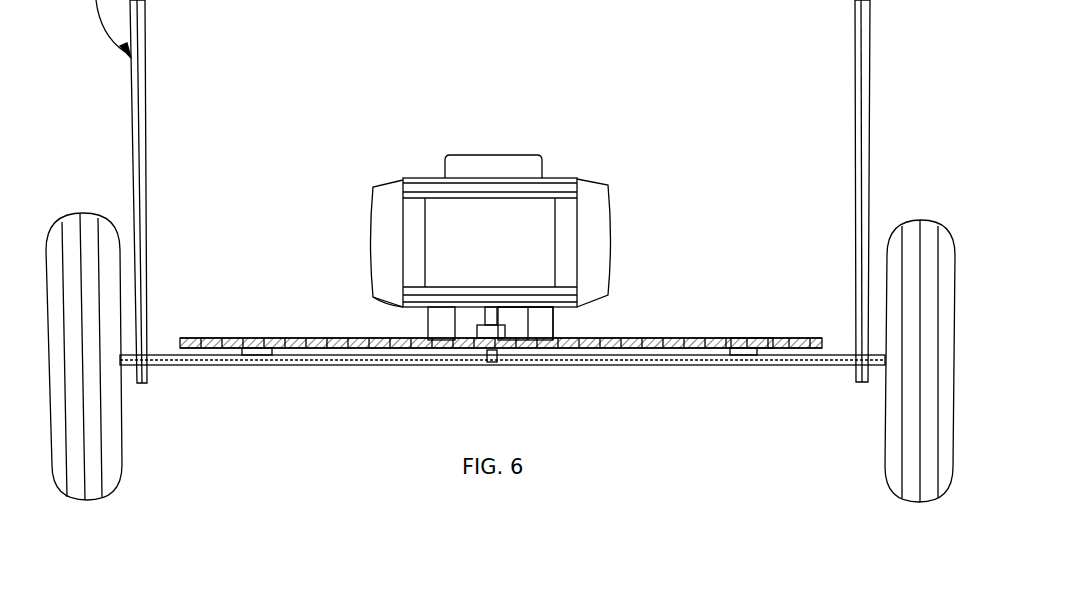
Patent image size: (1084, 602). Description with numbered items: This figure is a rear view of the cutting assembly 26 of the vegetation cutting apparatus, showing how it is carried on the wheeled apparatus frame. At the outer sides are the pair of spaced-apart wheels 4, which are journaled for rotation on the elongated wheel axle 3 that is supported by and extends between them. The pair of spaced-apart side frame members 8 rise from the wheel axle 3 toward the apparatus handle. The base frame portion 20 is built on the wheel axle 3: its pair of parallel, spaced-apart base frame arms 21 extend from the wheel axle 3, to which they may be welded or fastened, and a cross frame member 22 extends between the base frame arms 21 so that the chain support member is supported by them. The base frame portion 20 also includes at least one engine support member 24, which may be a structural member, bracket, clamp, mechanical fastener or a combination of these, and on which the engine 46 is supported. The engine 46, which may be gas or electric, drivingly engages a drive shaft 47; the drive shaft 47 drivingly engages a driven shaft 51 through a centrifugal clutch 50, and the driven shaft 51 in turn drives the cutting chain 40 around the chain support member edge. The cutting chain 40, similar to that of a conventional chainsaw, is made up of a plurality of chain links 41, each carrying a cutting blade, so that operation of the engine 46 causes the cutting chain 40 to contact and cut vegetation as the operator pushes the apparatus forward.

The wheel axle 3 is at (222, 366).
The wheels 4 is at (90, 220).
The side frame members 8 is at (146, 100).
The base frame portion 20 is at (745, 365).
The base frame arms 21 is at (282, 356).
The cross frame member 22 is at (387, 355).
The engine support member 24 is at (455, 307).
The cutting assembly 26 is at (257, 294).
The cutting chain 40 is at (690, 339).
The chain links 41 is at (732, 338).
The engine 46 is at (388, 188).
The drive shaft 47 is at (533, 316).
The centrifugal clutch 50 is at (476, 331).
The driven shaft 51 is at (492, 363).